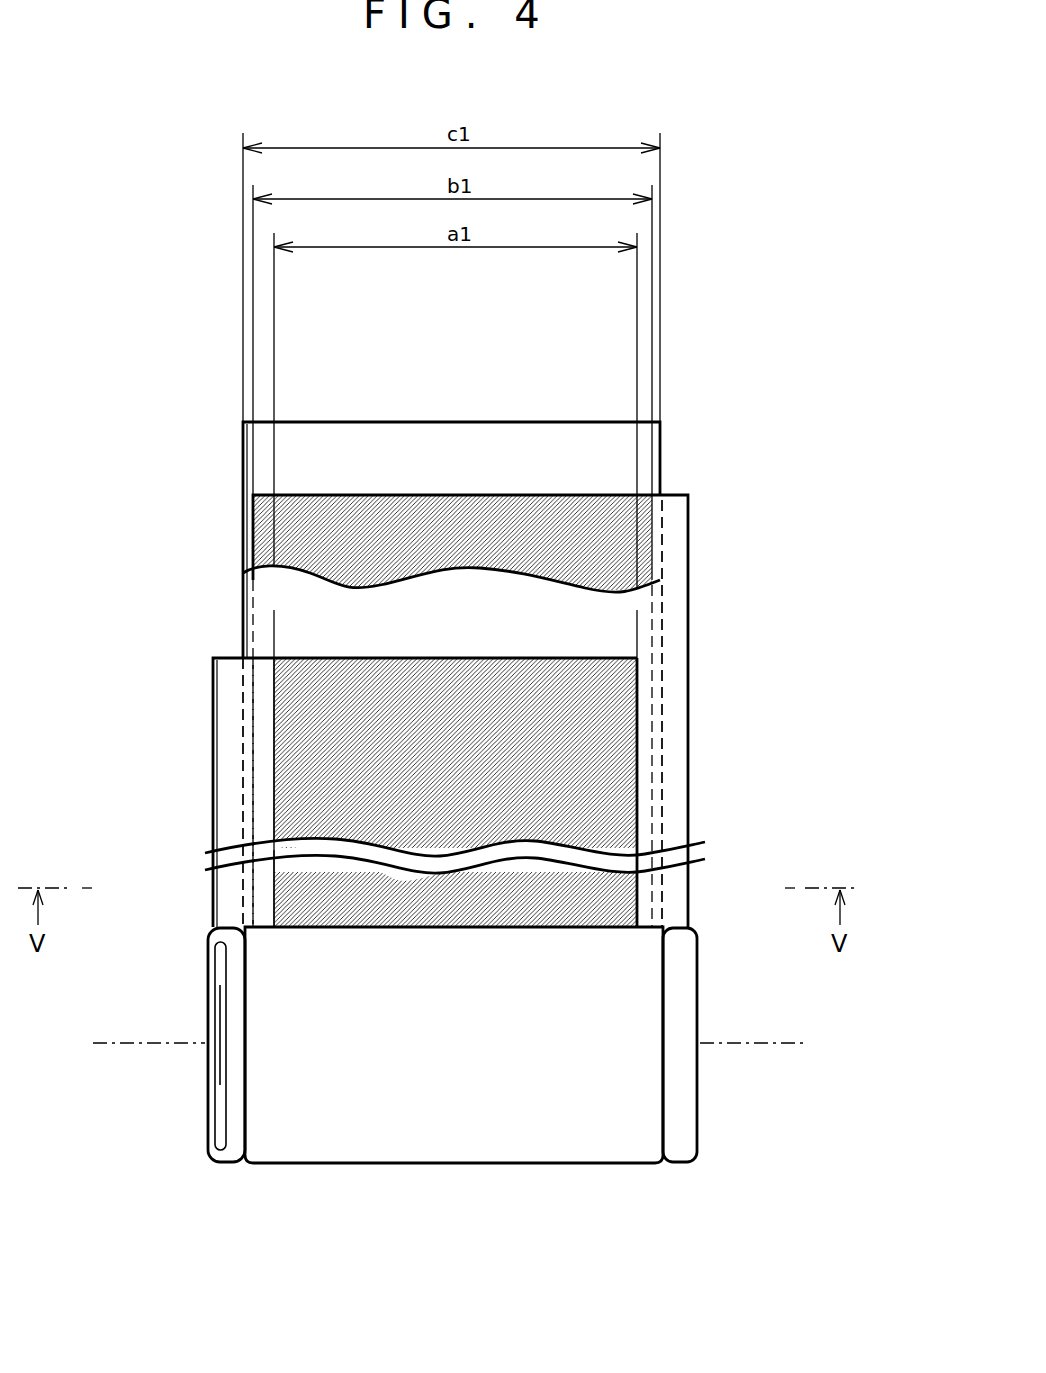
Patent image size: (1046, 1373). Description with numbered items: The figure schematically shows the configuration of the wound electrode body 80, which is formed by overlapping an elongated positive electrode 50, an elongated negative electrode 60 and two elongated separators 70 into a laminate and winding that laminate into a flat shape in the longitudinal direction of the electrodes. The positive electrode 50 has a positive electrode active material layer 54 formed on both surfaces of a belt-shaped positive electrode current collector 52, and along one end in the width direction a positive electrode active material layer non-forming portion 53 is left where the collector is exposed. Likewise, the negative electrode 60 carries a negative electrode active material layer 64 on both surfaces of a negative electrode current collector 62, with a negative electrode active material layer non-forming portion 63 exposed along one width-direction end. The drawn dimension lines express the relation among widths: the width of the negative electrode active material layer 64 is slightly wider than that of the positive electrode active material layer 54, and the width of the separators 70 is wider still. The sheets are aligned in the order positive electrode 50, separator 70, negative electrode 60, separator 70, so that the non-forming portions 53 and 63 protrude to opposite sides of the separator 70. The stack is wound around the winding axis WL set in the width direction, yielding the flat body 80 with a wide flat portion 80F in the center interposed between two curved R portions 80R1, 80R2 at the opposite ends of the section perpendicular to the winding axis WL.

The positive electrode 50 is at (352, 800).
The positive electrode current collector 52 is at (437, 657).
The positive electrode active material layer non-forming portion 53 is at (232, 810).
The positive electrode active material layer 54 is at (316, 784).
The negative electrode 60 is at (539, 724).
The negative electrode current collector 62 is at (440, 490).
The negative electrode active material layer non-forming portion 63 is at (672, 565).
The negative electrode active material layer 64 is at (570, 514).
The separator 70 is at (263, 455).
The wound electrode body 80 is at (466, 1052).
The flat portion 80F is at (385, 1030).
The R portion 80R1 is at (250, 1165).
The R portion 80R2 is at (693, 933).
The winding axis WL is at (795, 1043).